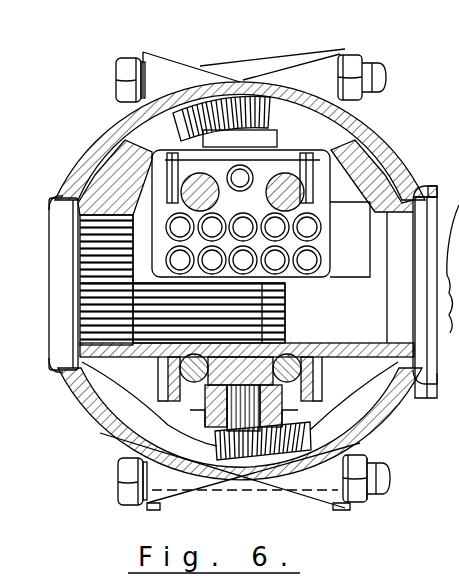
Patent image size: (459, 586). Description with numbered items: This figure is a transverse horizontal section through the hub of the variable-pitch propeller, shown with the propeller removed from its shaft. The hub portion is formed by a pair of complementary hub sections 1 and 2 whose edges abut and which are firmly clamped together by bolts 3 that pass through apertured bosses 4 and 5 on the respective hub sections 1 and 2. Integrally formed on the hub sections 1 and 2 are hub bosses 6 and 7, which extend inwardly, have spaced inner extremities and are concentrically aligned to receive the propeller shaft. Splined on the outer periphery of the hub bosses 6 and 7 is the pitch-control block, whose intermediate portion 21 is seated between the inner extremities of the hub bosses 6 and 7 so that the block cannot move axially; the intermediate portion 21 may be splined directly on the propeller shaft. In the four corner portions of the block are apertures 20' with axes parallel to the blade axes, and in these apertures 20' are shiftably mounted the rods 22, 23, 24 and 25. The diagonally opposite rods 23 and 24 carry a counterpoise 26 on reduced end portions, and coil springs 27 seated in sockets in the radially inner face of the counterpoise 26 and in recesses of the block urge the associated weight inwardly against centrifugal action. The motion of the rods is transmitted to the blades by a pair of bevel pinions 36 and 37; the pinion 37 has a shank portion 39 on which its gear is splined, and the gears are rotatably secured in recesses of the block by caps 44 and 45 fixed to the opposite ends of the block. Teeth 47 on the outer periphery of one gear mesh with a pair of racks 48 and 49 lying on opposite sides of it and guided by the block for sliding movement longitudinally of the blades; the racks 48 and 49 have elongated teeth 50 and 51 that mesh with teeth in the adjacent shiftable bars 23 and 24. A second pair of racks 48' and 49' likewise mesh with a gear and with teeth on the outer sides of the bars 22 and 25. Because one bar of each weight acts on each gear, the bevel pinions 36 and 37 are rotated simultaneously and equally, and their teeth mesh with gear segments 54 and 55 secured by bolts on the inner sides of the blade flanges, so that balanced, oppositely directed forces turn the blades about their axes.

The hub section 1 is at (100, 140).
The hub section 2 is at (373, 121).
The bolt 3 is at (128, 58).
The apertured boss 4 is at (326, 57).
The apertured boss 5 is at (170, 63).
The hub boss 6 is at (404, 168).
The hub boss 7 is at (142, 238).
The aperture 20' is at (247, 320).
The intermediate portion 21 is at (245, 352).
The shiftable rod 22 is at (294, 195).
The shiftable rod 23 is at (298, 366).
The shiftable rod 24 is at (182, 378).
The shiftable rod 25 is at (188, 191).
The counterpoise 26 is at (314, 254).
The coil spring 27 is at (315, 232).
The bevel pinion 36 is at (250, 140).
The bevel pinion 37 is at (264, 432).
The shank portion 39 is at (118, 500).
The cap 44 is at (293, 147).
The cap 45 is at (140, 452).
The teeth 47 is at (358, 455).
The rack 48 is at (331, 379).
The rack 48' is at (406, 159).
The rack 49 is at (154, 379).
The rack 49' is at (176, 177).
The elongated teeth 50 is at (300, 411).
The elongated teeth 51 is at (175, 419).
The gear segment 54 is at (173, 120).
The gear segment 55 is at (380, 465).